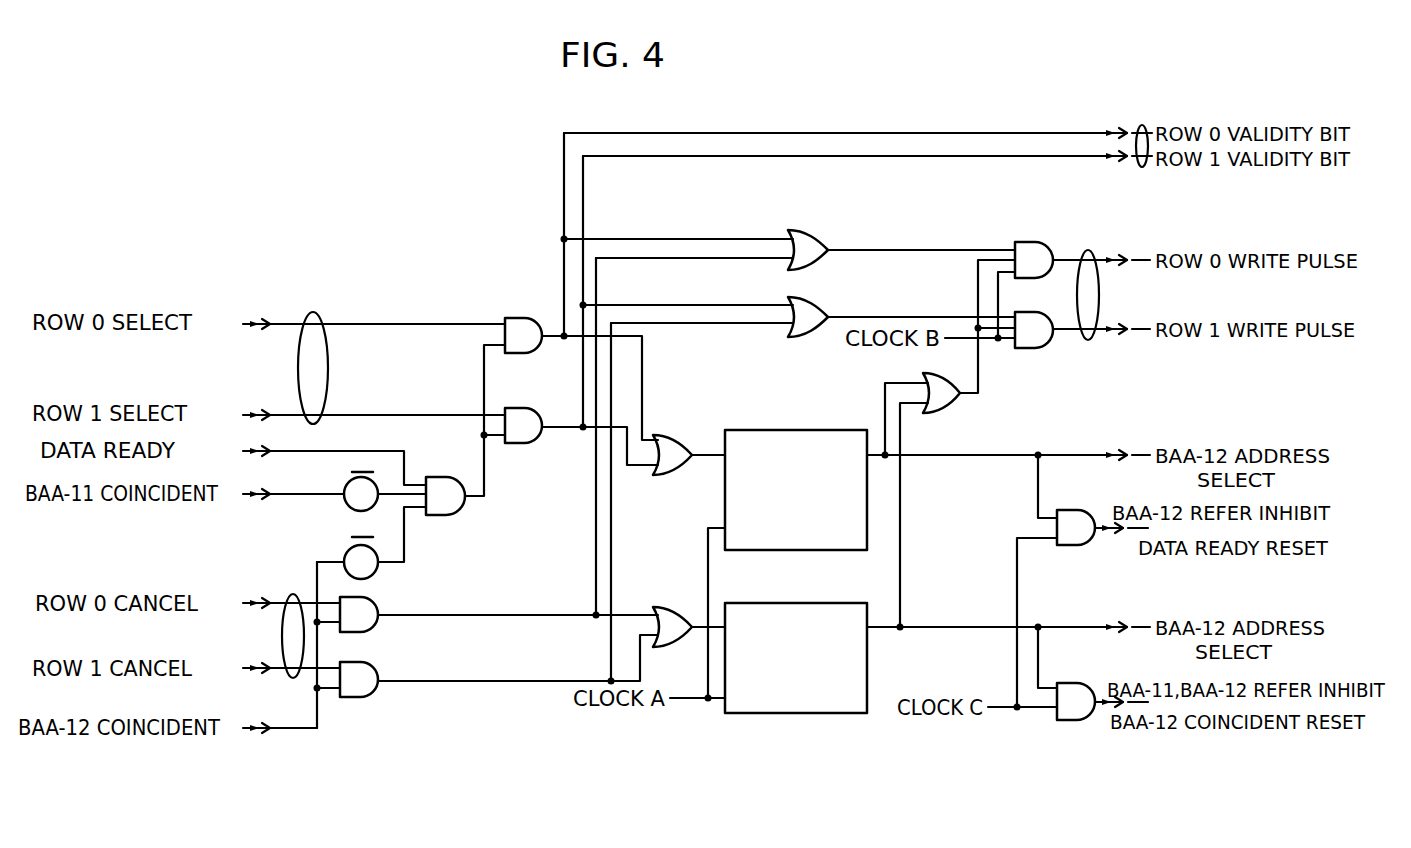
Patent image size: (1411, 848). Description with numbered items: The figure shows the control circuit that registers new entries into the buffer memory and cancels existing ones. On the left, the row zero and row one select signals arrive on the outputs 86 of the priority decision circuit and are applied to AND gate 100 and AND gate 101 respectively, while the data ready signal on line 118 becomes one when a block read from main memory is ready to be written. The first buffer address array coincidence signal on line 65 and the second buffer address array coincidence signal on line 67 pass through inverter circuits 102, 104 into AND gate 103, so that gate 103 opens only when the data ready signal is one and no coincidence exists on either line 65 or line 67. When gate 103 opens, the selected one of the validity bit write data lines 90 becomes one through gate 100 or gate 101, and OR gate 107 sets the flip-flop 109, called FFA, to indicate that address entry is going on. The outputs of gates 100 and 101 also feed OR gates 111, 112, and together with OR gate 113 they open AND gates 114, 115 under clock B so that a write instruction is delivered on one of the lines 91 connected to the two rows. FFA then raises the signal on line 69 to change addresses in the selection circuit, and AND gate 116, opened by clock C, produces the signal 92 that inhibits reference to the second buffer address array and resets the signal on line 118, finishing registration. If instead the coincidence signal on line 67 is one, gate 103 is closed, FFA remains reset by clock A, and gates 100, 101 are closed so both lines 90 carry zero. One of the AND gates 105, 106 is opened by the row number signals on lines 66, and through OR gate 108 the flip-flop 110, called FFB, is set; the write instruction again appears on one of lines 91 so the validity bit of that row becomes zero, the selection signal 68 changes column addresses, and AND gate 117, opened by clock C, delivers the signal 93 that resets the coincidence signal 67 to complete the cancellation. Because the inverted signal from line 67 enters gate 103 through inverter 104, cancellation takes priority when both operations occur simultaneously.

The outputs of the priority decision circuit 86 is at (322, 300).
The data ready line 118 is at (322, 451).
The BAA-11 coincidence signal line 65 is at (294, 497).
The inverter circuit 102 is at (347, 480).
The inverter circuit 104 is at (346, 546).
The AND gate 103 is at (445, 517).
The row number signal lines 66 is at (300, 591).
The BAA-12 coincidence signal line 67 is at (247, 731).
The AND gate 105 is at (379, 603).
The AND gate 106 is at (379, 671).
The AND gate 100 is at (528, 318).
The AND gate 101 is at (528, 408).
The validity bit write data lines 90 is at (1143, 125).
The OR gate 111 is at (812, 212).
The OR gate 112 is at (796, 338).
The OR gate 107 is at (660, 436).
The OR gate 108 is at (682, 590).
The flip-flop A (FFA) 109 is at (811, 431).
The flip-flop B (FFB) 110 is at (790, 604).
The OR gate 113 is at (926, 375).
The AND gate 114 is at (1040, 242).
The AND gate 115 is at (1036, 348).
The write instruction lines 91 is at (1091, 250).
The BAA-12 address selection signal line 69 is at (1052, 455).
The AND gate 116 is at (1071, 511).
The data ready reset / BAA-12 refer inhibit signal line 92 is at (1130, 532).
The selection signal line 68 is at (1058, 627).
The AND gate 117 is at (1071, 684).
The coincidence reset signal line 93 is at (1104, 712).